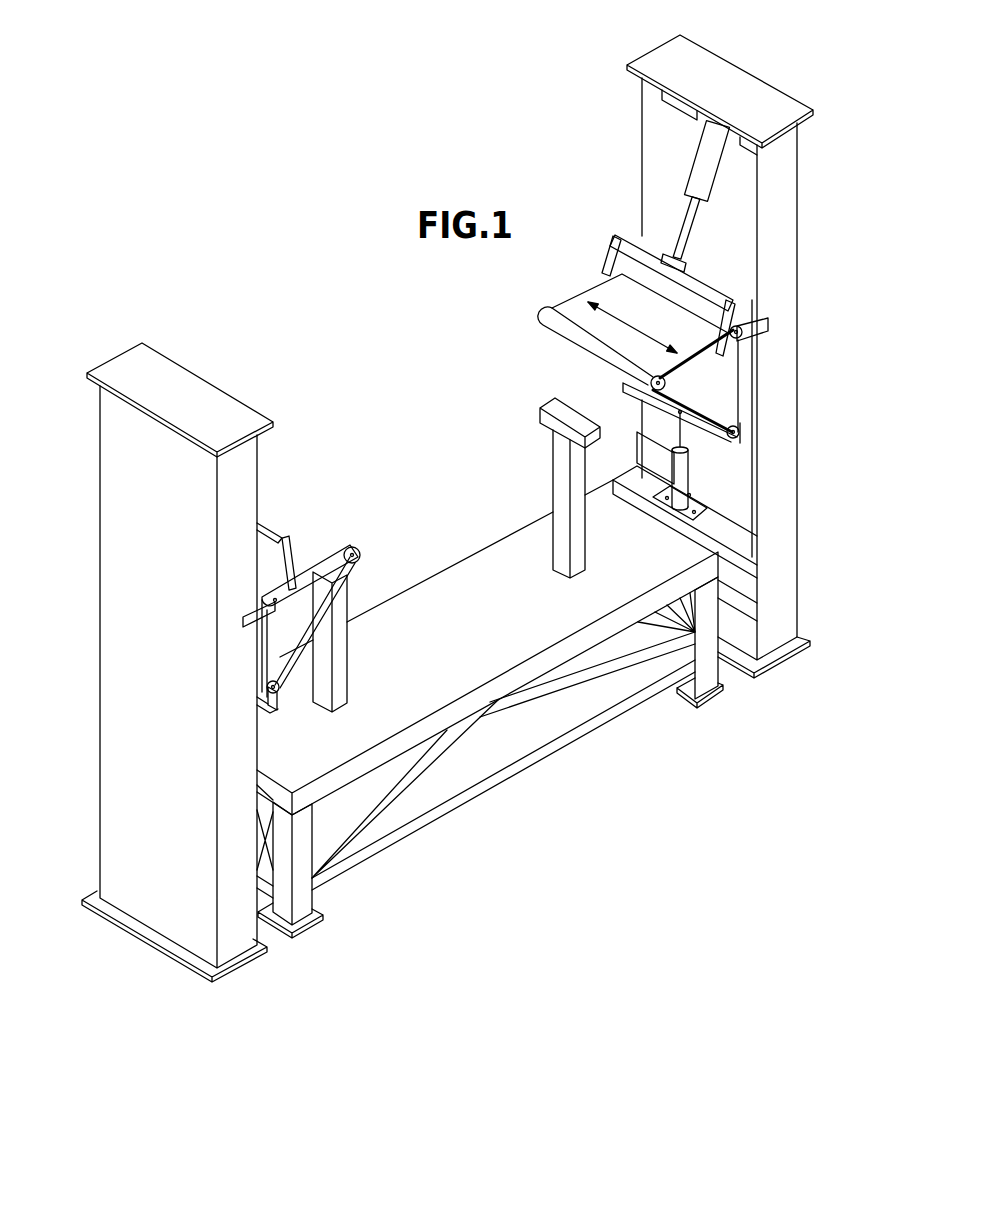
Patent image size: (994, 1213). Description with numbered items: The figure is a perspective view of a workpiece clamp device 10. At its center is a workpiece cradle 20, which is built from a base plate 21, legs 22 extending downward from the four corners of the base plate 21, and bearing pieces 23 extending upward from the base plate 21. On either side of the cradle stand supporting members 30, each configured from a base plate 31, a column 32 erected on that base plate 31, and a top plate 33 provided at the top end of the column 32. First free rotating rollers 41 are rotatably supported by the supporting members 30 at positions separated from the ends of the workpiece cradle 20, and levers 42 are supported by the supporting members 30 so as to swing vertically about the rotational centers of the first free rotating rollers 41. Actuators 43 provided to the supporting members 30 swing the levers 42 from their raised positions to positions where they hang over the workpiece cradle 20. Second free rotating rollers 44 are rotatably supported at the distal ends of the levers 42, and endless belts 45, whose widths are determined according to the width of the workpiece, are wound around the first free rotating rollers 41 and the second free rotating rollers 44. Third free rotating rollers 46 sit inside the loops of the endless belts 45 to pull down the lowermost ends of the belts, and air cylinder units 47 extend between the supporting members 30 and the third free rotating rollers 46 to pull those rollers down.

The workpiece clamp device 10 is at (293, 207).
The workpiece cradle 20 is at (527, 810).
The base plate 21 is at (463, 600).
The legs 22 is at (300, 890).
The bearing pieces 23 is at (376, 582).
The supporting members 30 is at (127, 963).
The base plates 31 is at (130, 933).
The columns 32 is at (150, 667).
The top plates 33 is at (183, 388).
The first free rotating rollers 41 is at (773, 300).
The levers 42 is at (713, 377).
The actuators 43 is at (702, 153).
The second free rotating rollers 44 is at (548, 318).
The endless belts 45 is at (594, 336).
The third free rotating rollers 46 is at (740, 423).
The air cylinder units 47 is at (682, 477).